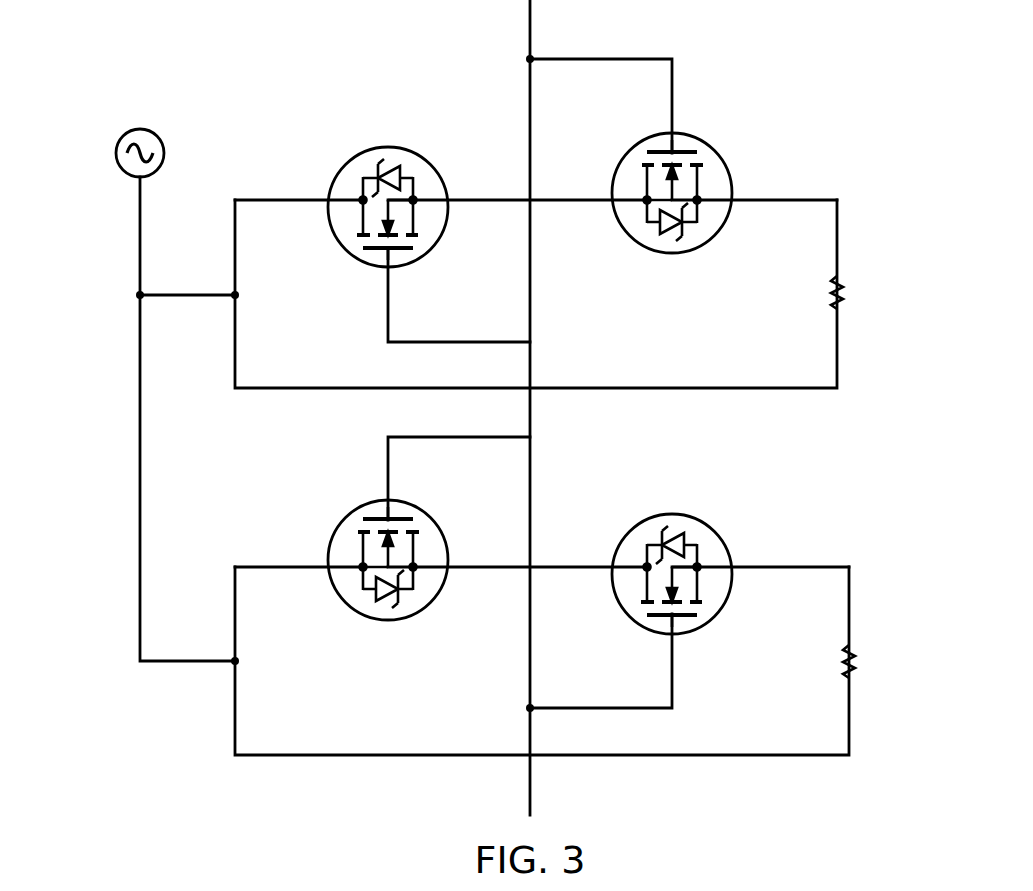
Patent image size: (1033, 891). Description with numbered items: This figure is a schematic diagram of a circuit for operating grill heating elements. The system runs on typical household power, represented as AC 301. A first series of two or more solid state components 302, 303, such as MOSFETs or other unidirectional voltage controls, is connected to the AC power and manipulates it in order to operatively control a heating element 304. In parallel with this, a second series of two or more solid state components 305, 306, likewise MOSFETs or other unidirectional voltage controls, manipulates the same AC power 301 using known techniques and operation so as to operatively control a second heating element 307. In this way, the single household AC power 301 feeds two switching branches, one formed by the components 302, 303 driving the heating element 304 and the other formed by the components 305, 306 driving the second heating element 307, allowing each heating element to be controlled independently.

The AC power 301 is at (116, 153).
The solid state component 302 is at (347, 123).
The solid state component 303 is at (729, 110).
The heating element 304 is at (843, 296).
The solid state component 305 is at (346, 648).
The solid state component 306 is at (741, 646).
The second heating element 307 is at (855, 665).